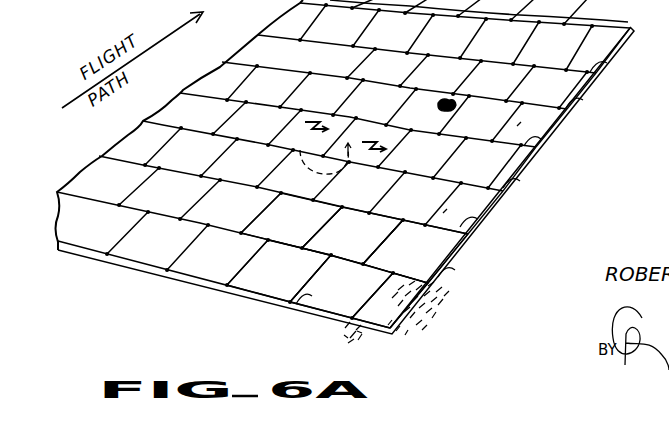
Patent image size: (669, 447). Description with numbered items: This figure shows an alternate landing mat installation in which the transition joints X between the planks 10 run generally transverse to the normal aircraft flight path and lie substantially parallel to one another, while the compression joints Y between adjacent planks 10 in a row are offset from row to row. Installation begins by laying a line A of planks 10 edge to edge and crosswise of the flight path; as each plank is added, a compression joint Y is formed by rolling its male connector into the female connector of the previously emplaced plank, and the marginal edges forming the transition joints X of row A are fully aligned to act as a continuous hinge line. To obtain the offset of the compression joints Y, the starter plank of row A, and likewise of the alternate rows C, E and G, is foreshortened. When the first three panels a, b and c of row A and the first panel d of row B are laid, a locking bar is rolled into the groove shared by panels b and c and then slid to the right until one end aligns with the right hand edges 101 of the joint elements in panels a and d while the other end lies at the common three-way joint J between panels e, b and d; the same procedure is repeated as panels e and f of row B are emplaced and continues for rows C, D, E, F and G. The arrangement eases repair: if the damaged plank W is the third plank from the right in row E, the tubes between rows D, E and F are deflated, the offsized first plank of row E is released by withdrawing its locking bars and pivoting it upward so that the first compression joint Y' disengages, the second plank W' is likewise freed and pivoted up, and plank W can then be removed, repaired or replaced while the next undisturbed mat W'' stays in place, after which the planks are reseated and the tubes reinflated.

The plank 10 is at (85, 239).
The right hand edges of elements 101 is at (167, 272).
The first panel of row A a is at (377, 317).
The second panel of row A b is at (326, 304).
The third panel of row A c is at (263, 290).
The first panel of row B d is at (397, 267).
The second panel of row B e is at (319, 250).
The third panel of row B f is at (275, 232).
The common three-way joint J is at (363, 264).
The row A of planks A is at (446, 308).
The row B of planks B is at (478, 261).
The row C of planks C is at (513, 213).
The row D of planks D is at (549, 174).
The row E of planks E is at (580, 134).
The row F of planks F is at (608, 96).
The row G of planks G is at (634, 57).
The transition joint X is at (650, 88).
The compression joint Y is at (454, 220).
The first compression joint Y' is at (463, 141).
The damaged plank W is at (429, 112).
The second plank from right hand edge W' is at (426, 135).
The next undisturbed mat W'' is at (345, 133).